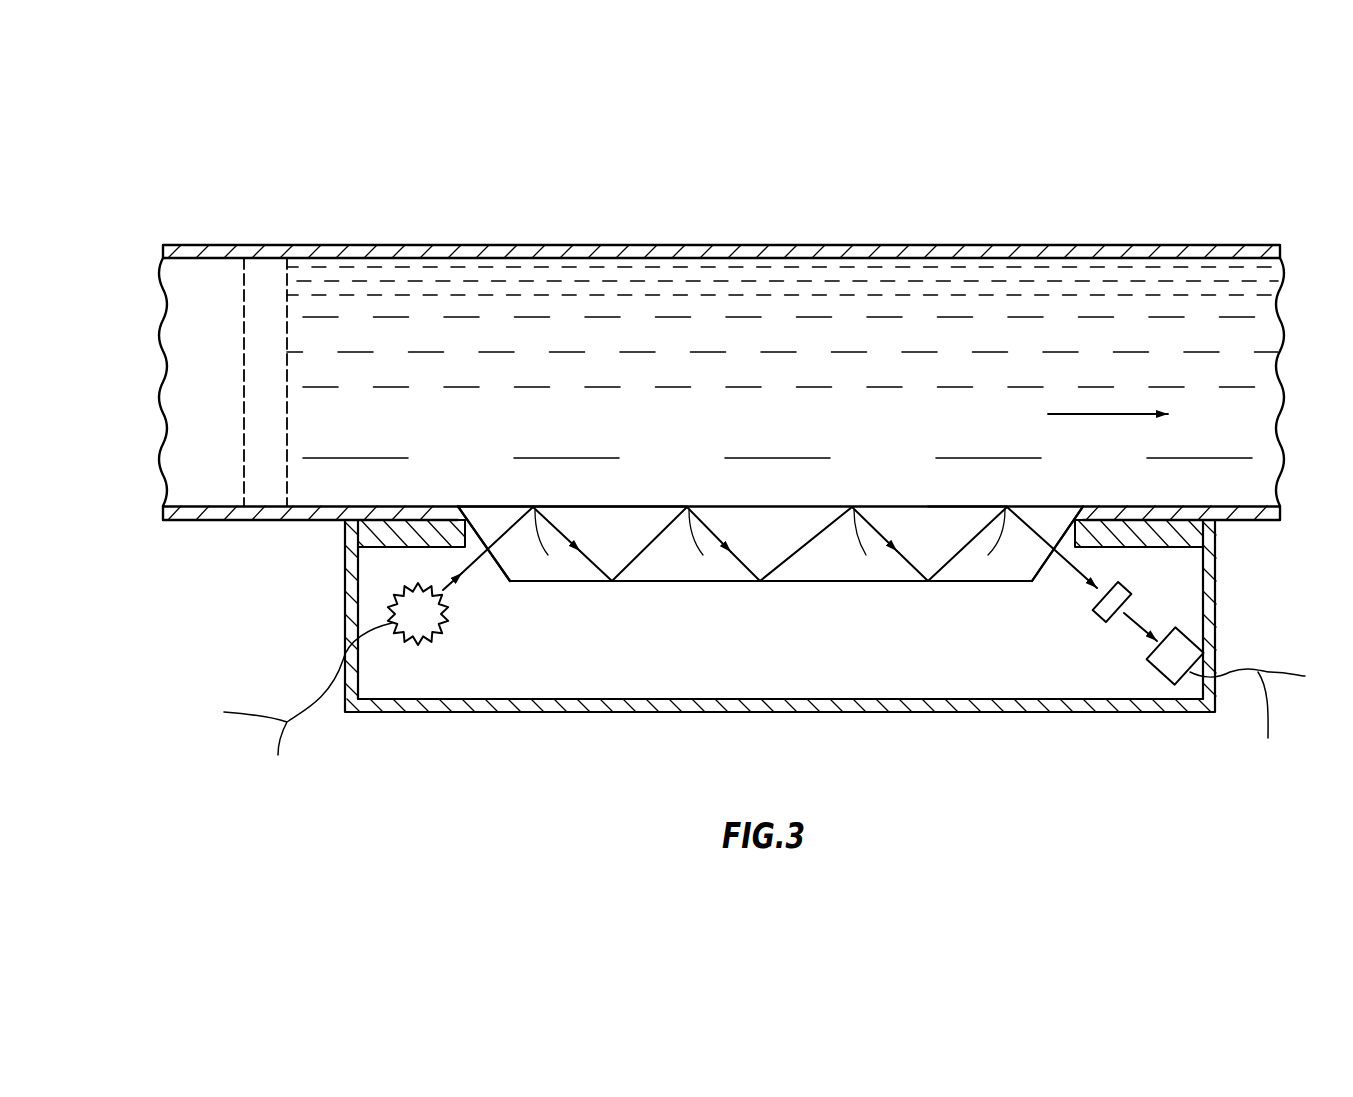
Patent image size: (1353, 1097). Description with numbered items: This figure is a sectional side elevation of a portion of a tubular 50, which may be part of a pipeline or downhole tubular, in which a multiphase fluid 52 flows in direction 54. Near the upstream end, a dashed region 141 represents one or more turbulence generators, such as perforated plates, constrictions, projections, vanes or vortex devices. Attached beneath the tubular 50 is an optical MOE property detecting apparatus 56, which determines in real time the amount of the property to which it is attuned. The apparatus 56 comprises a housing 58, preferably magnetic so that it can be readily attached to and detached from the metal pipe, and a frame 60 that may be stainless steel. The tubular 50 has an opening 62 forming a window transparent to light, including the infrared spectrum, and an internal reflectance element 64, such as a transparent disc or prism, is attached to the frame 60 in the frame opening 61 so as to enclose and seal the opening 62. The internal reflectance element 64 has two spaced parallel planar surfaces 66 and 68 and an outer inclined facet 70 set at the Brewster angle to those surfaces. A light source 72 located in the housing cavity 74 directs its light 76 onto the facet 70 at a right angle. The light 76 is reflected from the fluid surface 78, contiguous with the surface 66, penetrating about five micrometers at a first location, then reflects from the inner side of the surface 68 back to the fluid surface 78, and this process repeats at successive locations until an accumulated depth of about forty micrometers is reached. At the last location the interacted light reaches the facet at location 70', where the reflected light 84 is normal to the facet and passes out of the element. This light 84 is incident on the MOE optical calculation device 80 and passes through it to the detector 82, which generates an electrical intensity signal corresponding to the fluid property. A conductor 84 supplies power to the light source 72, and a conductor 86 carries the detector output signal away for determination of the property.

The tubular 50 is at (255, 520).
The multiphase fluid 52 is at (313, 408).
The flow direction 54 is at (1100, 414).
The optical MOE property detecting apparatus 56 is at (523, 742).
The housing 58 is at (1075, 712).
The frame 60 is at (385, 549).
The frame opening 61 is at (475, 508).
The opening 62 is at (735, 507).
The internal reflectance element 64 is at (683, 570).
The planar surface 66 is at (575, 507).
The planar surface 68 is at (612, 583).
The inclined facet 70 is at (505, 579).
The facet location 70' is at (1168, 547).
The light source 72 is at (418, 648).
The housing cavity 74 is at (905, 680).
The light 76 is at (448, 584).
The fluid surface 78 is at (943, 507).
The MOE optical calculation device 80 is at (1098, 613).
The detector 82 is at (1165, 680).
The conductor / reflected light 84 is at (1077, 575).
The conductor 86 is at (1266, 700).
The turbulence generators 141 is at (263, 272).